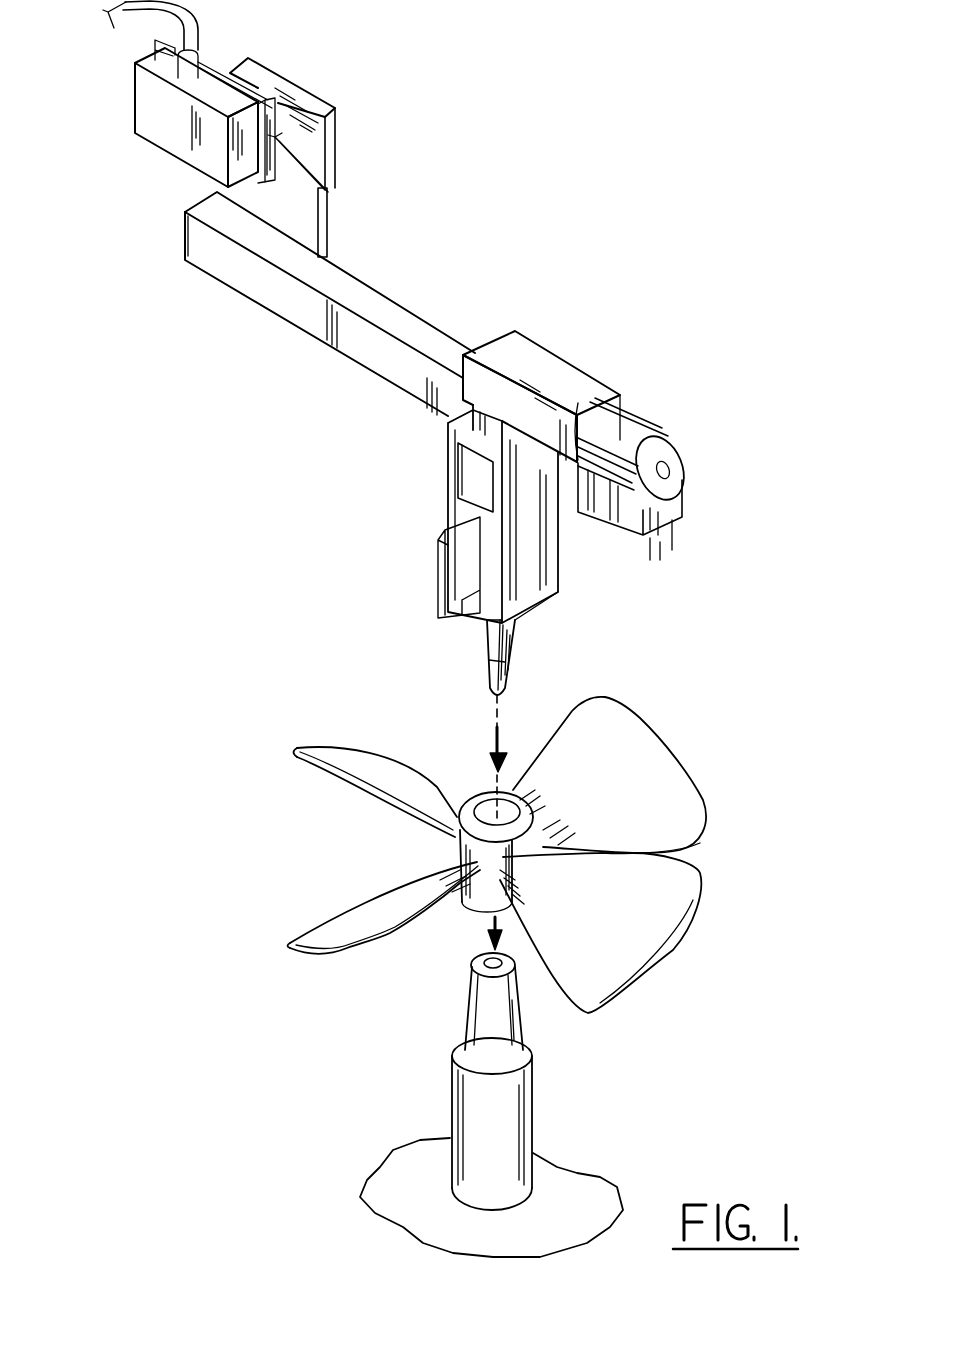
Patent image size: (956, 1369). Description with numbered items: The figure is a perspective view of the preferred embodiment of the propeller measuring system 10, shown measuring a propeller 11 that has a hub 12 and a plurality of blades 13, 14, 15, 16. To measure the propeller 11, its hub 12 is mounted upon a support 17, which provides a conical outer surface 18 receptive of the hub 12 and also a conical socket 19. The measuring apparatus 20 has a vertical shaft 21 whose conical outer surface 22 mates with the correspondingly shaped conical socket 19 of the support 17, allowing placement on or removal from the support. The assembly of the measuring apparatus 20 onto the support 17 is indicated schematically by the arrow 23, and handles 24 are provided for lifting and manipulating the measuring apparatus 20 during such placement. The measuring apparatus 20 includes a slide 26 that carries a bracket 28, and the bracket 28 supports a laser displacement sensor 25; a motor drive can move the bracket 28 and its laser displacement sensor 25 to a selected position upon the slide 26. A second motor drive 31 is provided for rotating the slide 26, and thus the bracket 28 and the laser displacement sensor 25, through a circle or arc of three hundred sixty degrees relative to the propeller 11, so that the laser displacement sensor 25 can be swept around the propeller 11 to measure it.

The propeller measuring system 10 is at (755, 112).
The propeller 11 is at (667, 740).
The hub 12 is at (467, 783).
The blade 13 is at (307, 770).
The blade 14 is at (697, 787).
The blade 15 is at (667, 953).
The blade 16 is at (297, 947).
The support 17 is at (470, 1117).
The conical outer surface 18 is at (478, 1008).
The conical socket 19 is at (487, 950).
The measuring apparatus 20 is at (407, 307).
The vertical shaft 21 is at (513, 648).
The conical outer surface 22 is at (493, 662).
The arrow 23 is at (503, 747).
The handles 24 is at (380, 602).
The laser displacement sensor 25 is at (147, 118).
The slide 26 is at (278, 295).
The bracket 28 is at (295, 200).
The second motor drive 31 is at (648, 418).